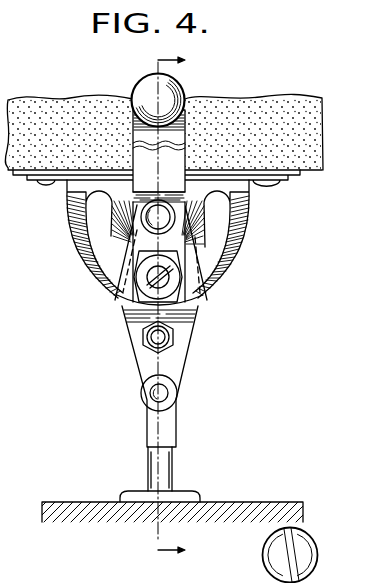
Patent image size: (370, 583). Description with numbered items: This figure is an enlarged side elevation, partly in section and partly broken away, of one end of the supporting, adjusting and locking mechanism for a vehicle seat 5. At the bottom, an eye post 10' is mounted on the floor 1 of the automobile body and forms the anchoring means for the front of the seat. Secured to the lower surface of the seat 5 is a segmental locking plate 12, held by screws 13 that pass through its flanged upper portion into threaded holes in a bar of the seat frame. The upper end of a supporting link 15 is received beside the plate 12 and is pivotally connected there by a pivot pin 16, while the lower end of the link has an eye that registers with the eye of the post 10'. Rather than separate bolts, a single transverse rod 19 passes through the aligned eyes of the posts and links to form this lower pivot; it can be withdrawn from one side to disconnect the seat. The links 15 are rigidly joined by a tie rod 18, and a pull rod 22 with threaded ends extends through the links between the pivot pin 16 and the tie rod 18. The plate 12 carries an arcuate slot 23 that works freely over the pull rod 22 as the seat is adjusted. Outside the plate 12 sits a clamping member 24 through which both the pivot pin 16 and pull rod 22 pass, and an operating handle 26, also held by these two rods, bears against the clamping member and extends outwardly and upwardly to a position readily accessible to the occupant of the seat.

The floor 1 is at (83, 508).
The seat 5 is at (297, 97).
The eye post 10' is at (177, 474).
The segmental locking plate 12 is at (243, 213).
The screws 13 is at (45, 183).
The supporting links 15 is at (177, 358).
The pivot pin 16 is at (148, 210).
The tie rod 18 is at (153, 343).
The rod 19 is at (153, 393).
The pull rod 22 is at (198, 298).
The arcuate slots 23 is at (93, 235).
The clamping member 24 is at (120, 290).
The operating handle 26 is at (175, 162).